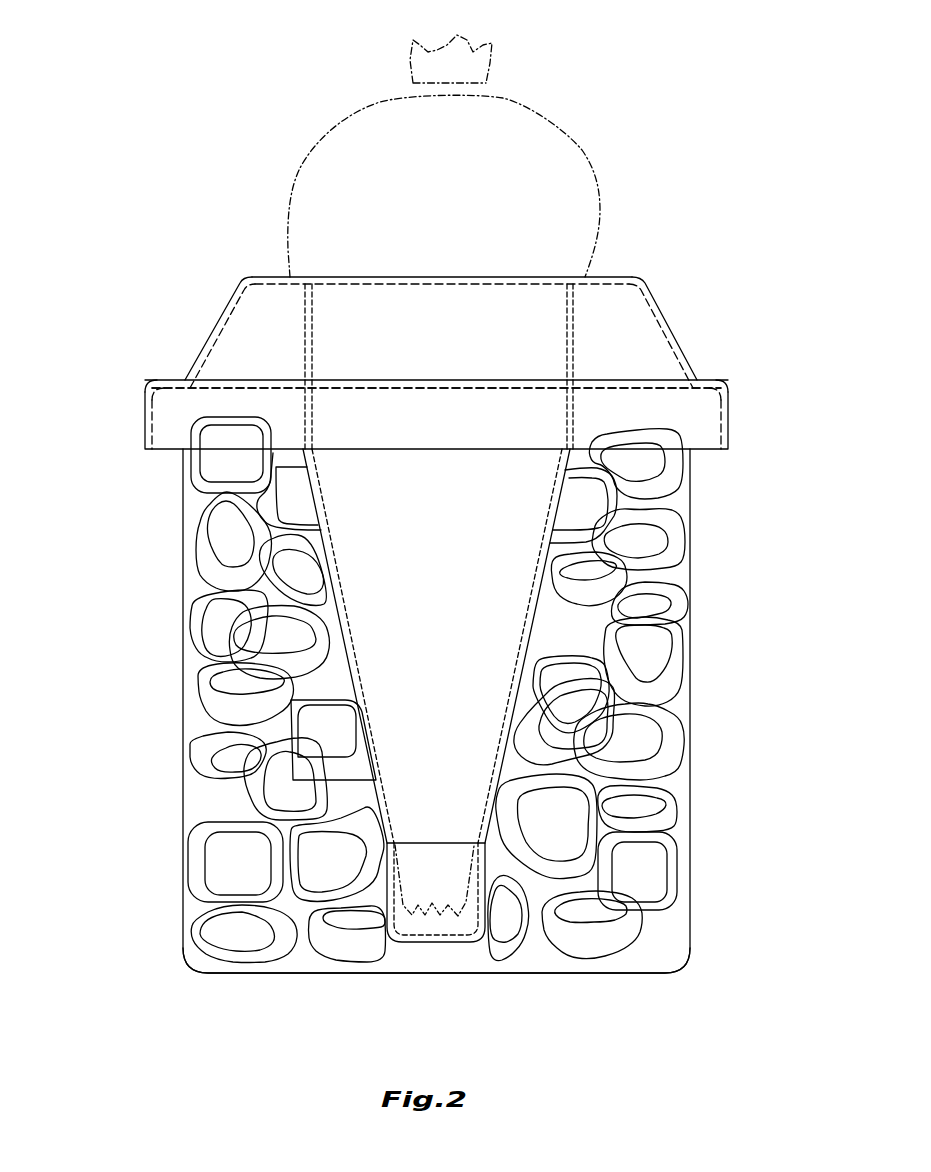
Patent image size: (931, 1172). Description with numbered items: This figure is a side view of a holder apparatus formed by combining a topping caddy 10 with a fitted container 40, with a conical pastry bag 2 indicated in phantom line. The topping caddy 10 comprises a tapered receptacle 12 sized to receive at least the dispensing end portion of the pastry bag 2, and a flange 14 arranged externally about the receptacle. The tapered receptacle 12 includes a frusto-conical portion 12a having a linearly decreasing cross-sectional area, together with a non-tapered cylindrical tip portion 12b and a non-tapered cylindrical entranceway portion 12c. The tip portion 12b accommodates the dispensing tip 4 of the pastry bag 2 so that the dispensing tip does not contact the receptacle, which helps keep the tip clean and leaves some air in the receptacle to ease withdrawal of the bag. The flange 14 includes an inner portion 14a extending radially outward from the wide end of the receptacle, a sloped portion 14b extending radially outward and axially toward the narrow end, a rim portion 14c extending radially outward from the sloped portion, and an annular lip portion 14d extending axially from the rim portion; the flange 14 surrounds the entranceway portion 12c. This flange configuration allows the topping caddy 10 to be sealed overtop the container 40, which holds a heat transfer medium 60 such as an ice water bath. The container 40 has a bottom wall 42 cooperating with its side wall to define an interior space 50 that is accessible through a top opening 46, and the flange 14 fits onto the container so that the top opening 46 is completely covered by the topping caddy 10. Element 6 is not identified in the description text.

The pastry bag 2 is at (557, 125).
The dispensing tip 4 is at (445, 915).
The bag closure 6 is at (380, 100).
The topping caddy 10 is at (399, 315).
The tapered receptacle 12 is at (547, 660).
The frusto-conical portion 12a is at (318, 617).
The tip portion 12b is at (408, 935).
The entranceway portion 12c is at (315, 330).
The flange 14 is at (399, 315).
The inner portion 14a is at (268, 277).
The sloped portion 14b is at (207, 327).
The rim portion 14c is at (148, 407).
The annular lip portion 14d is at (148, 423).
The container 40 is at (493, 737).
The bottom wall 42 is at (597, 975).
The top opening 46 is at (633, 415).
The interior space 50 is at (185, 750).
The heat transfer medium 60 is at (559, 646).